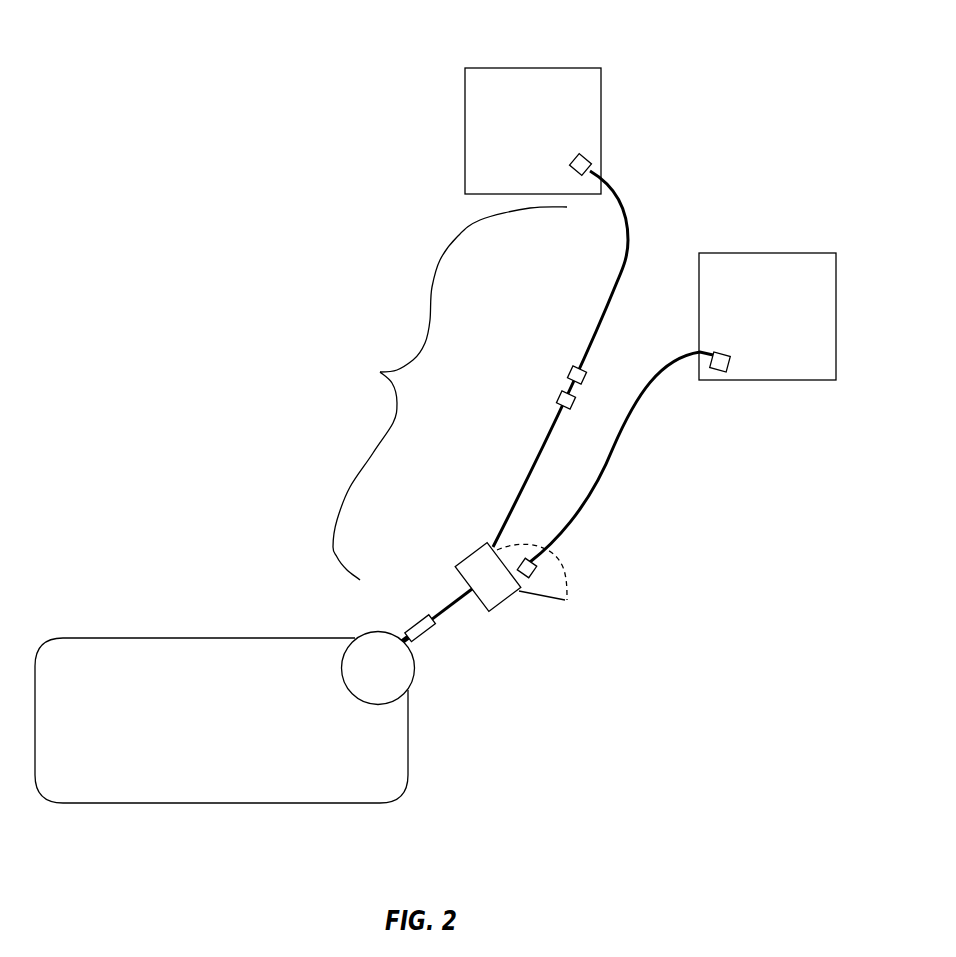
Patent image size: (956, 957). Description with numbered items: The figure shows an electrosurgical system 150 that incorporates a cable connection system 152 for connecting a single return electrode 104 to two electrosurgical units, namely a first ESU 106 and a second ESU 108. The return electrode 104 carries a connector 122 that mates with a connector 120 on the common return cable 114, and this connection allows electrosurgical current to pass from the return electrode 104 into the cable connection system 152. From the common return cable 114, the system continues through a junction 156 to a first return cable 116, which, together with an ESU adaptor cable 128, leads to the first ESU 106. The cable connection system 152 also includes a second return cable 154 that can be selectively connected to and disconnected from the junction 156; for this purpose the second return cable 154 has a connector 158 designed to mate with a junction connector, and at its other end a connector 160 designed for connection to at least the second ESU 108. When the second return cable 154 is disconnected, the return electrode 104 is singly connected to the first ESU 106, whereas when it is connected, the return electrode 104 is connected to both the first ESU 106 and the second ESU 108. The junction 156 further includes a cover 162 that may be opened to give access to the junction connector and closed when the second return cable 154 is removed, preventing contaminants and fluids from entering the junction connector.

The electrosurgical system 150 is at (272, 55).
The first ESU 106 is at (533, 68).
The second ESU 108 is at (762, 253).
The ESU adaptor cable 128 is at (607, 250).
The first return cable 116 is at (528, 455).
The cable connection system 152 is at (450, 393).
The second return cable 154 is at (625, 436).
The connector 160 is at (727, 372).
The connector 158 is at (535, 558).
The common return cable 114 is at (447, 592).
The connector 120 is at (432, 632).
The junction 156 is at (505, 598).
The cover 162 is at (566, 602).
The return electrode 104 is at (190, 803).
The connector 122 is at (403, 640).